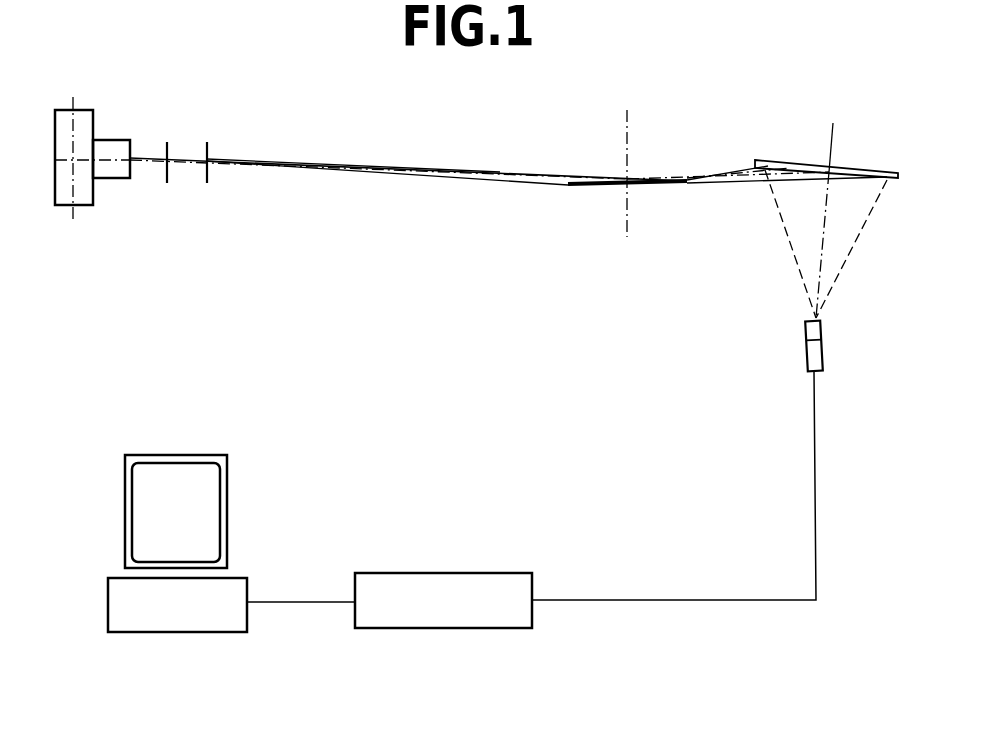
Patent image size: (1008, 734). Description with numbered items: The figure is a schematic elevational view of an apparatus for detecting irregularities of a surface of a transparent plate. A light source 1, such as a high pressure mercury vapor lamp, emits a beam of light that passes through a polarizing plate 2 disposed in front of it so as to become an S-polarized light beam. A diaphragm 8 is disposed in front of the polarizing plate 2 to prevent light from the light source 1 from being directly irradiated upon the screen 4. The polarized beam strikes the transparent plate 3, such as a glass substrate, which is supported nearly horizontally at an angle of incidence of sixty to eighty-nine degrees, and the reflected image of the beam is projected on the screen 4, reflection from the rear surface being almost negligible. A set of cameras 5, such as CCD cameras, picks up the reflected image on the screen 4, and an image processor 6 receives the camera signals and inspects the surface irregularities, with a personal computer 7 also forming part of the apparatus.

The light source 1 is at (83, 197).
The polarizing plate 2 is at (167, 183).
The diaphragm 8 is at (207, 183).
The transparent plate 3 is at (593, 186).
The screen 4 is at (790, 160).
The cameras 5 is at (802, 360).
The image processor 6 is at (473, 573).
The personal computer 7 is at (207, 615).